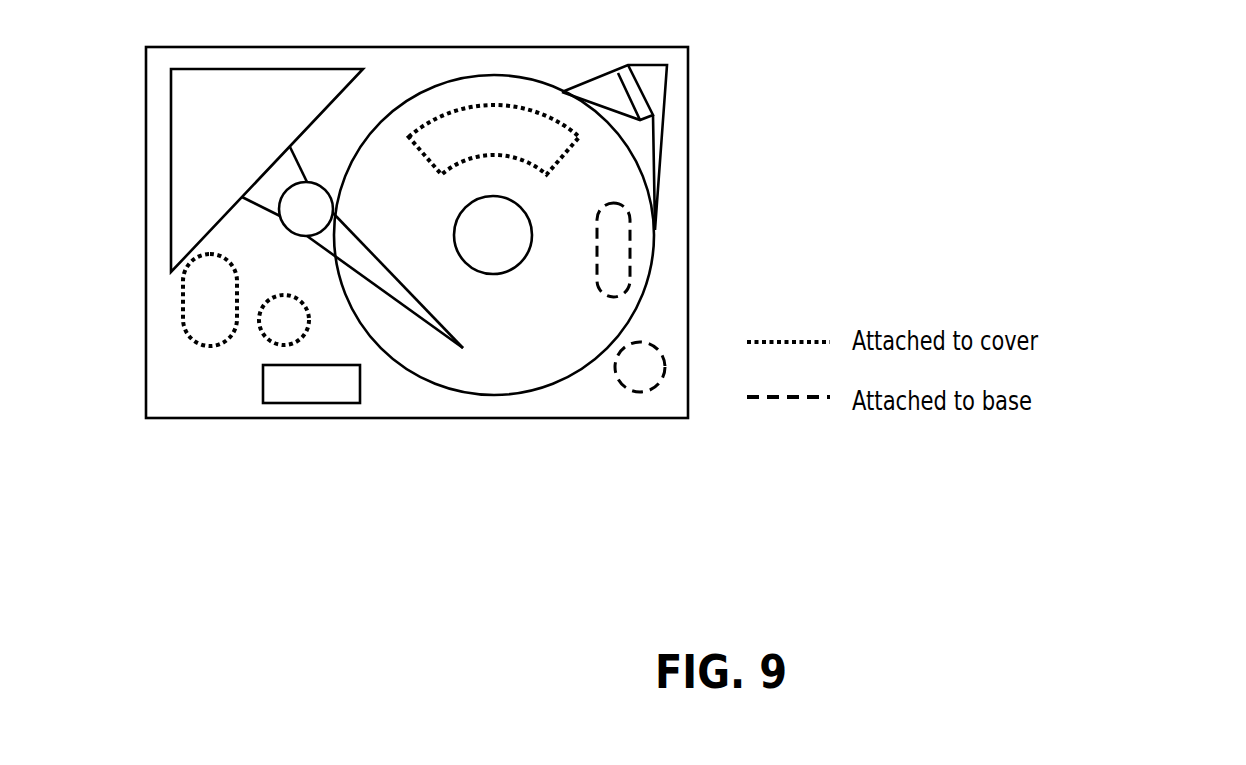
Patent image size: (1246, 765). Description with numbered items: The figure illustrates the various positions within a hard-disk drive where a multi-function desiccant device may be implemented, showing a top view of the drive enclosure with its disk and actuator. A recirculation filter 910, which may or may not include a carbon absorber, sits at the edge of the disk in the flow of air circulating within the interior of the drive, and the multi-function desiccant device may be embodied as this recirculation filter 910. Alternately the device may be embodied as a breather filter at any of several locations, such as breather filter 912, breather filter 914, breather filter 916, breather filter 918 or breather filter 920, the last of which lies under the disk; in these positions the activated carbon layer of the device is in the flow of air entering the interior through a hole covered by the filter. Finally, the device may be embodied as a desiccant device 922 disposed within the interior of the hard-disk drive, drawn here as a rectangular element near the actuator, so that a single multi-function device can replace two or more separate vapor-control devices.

The recirculation filter 910 is at (688, 93).
The breather filter 912 is at (202, 306).
The breather filter 914 is at (284, 345).
The breather filter 916 is at (655, 388).
The breather filter 918 is at (535, 152).
The breather filter 920 is at (632, 257).
The desiccant device 922 is at (337, 387).